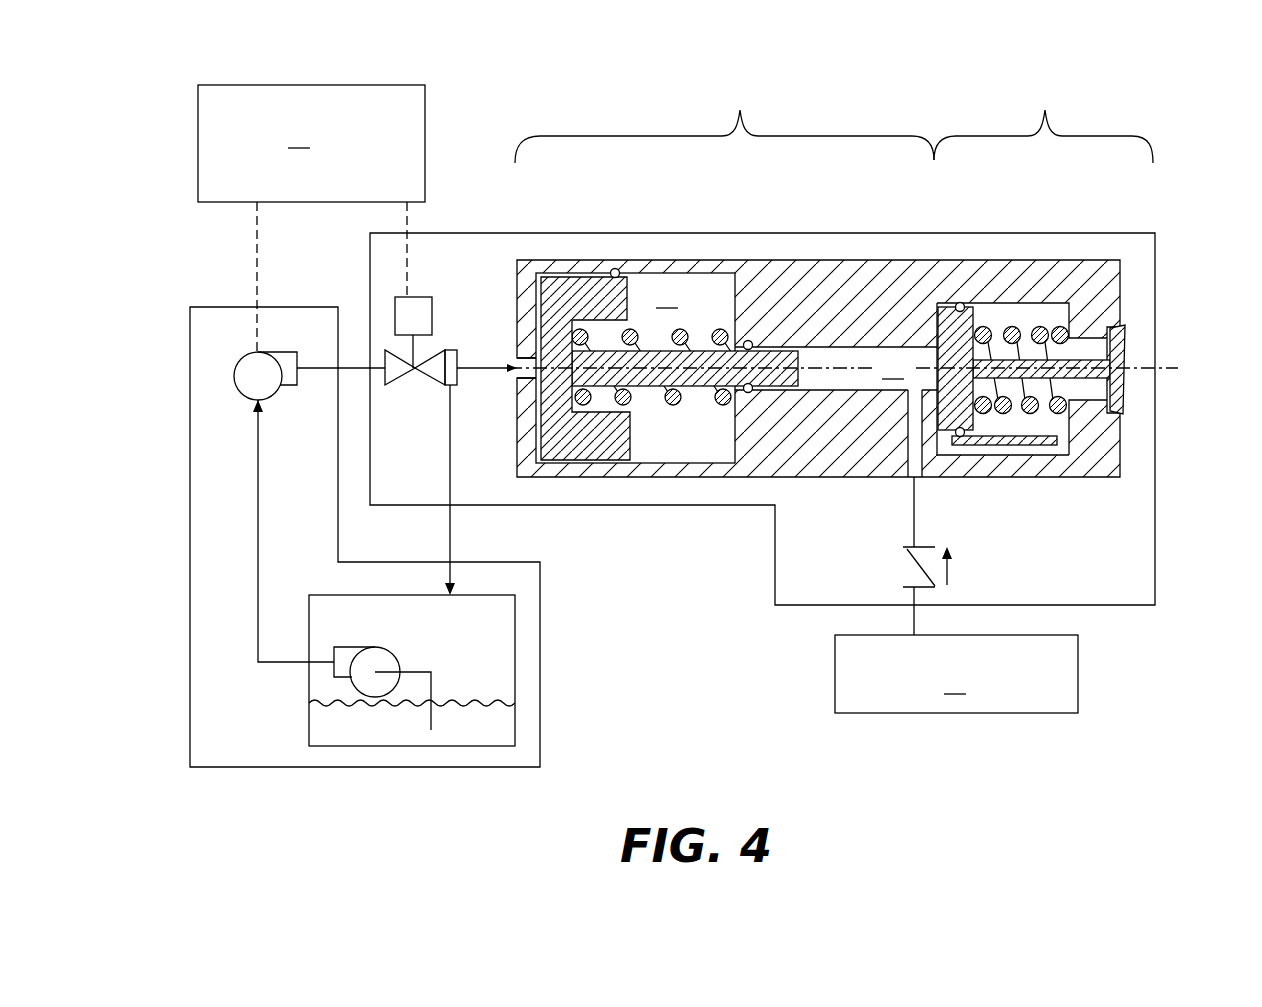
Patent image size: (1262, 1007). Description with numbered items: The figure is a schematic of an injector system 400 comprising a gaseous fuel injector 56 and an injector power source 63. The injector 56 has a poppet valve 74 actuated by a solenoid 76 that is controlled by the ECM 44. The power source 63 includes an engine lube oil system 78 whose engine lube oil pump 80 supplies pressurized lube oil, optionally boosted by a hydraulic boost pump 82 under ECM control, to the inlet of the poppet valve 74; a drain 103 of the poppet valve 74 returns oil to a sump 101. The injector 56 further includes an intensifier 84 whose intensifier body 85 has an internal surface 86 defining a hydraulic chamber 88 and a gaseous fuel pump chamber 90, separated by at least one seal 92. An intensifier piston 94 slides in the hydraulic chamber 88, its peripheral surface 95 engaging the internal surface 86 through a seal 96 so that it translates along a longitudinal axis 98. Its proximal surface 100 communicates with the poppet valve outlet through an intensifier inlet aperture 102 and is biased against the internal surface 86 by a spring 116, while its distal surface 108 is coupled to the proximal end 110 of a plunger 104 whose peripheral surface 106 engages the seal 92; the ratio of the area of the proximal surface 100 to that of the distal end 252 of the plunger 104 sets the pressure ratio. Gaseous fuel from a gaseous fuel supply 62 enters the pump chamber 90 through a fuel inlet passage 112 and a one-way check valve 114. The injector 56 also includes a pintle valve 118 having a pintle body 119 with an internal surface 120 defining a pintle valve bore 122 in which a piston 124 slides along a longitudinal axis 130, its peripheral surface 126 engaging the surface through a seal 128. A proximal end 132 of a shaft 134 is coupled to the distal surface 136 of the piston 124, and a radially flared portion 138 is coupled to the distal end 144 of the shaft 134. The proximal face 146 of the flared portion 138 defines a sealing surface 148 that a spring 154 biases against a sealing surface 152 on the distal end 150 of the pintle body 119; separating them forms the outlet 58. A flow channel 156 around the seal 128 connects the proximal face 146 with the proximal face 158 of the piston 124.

The injector system 400 is at (813, 72).
The ECM 44 is at (311, 218).
The gaseous fuel injector 56 is at (717, 521).
The outlet 58 is at (1115, 336).
The gaseous fuel supply 62 is at (956, 674).
The injector power source 63 is at (540, 642).
The poppet valve 74 is at (432, 380).
The solenoid 76 is at (425, 297).
The engine lube oil system 78 is at (465, 746).
The engine lube oil pump 80 is at (375, 645).
The hydraulic boost pump 82 is at (234, 373).
The intensifier 84 is at (724, 120).
The intensifier body 85 is at (753, 464).
The internal surface 86 is at (715, 288).
The hydraulic chamber 88 is at (635, 368).
The gaseous fuel pump chamber 90 is at (836, 368).
The seal 92 is at (751, 341).
The intensifier piston 94 is at (592, 283).
The peripheral surface 95 is at (560, 300).
The seal 96 is at (616, 269).
The longitudinal axis 98 is at (840, 347).
The proximal surface 100 is at (535, 300).
The sump 101 is at (492, 700).
The intensifier inlet aperture 102 is at (517, 362).
The drain 103 is at (448, 466).
The plunger 104 is at (648, 384).
The peripheral surface 106 is at (770, 389).
The distal surface 108 is at (583, 406).
The proximal end 110 is at (578, 360).
The fuel inlet passage 112 is at (917, 442).
The one-way check valve 114 is at (913, 565).
The spring 116 is at (672, 404).
The pintle valve 118 is at (1043, 120).
The pintle body 119 is at (1157, 254).
The internal surface 120 is at (1005, 302).
The pintle valve bore 122 is at (973, 365).
The piston 124 is at (945, 305).
The peripheral surface 126 is at (963, 303).
The seal 128 is at (958, 437).
The longitudinal axis 130 is at (1175, 370).
The proximal end 132 is at (973, 417).
The shaft 134 is at (1112, 325).
The distal surface 136 is at (1068, 330).
The radially flared portion 138 is at (1123, 336).
The distal end 144 is at (1125, 362).
The proximal face 146 is at (1125, 420).
The sealing surface 148 is at (1113, 442).
The distal end 150 is at (1122, 468).
The sealing surface 152 is at (1127, 413).
The spring 154 is at (1025, 450).
The flow channel 156 is at (1042, 455).
The proximal face 158 is at (935, 345).
The distal end 252 is at (818, 391).